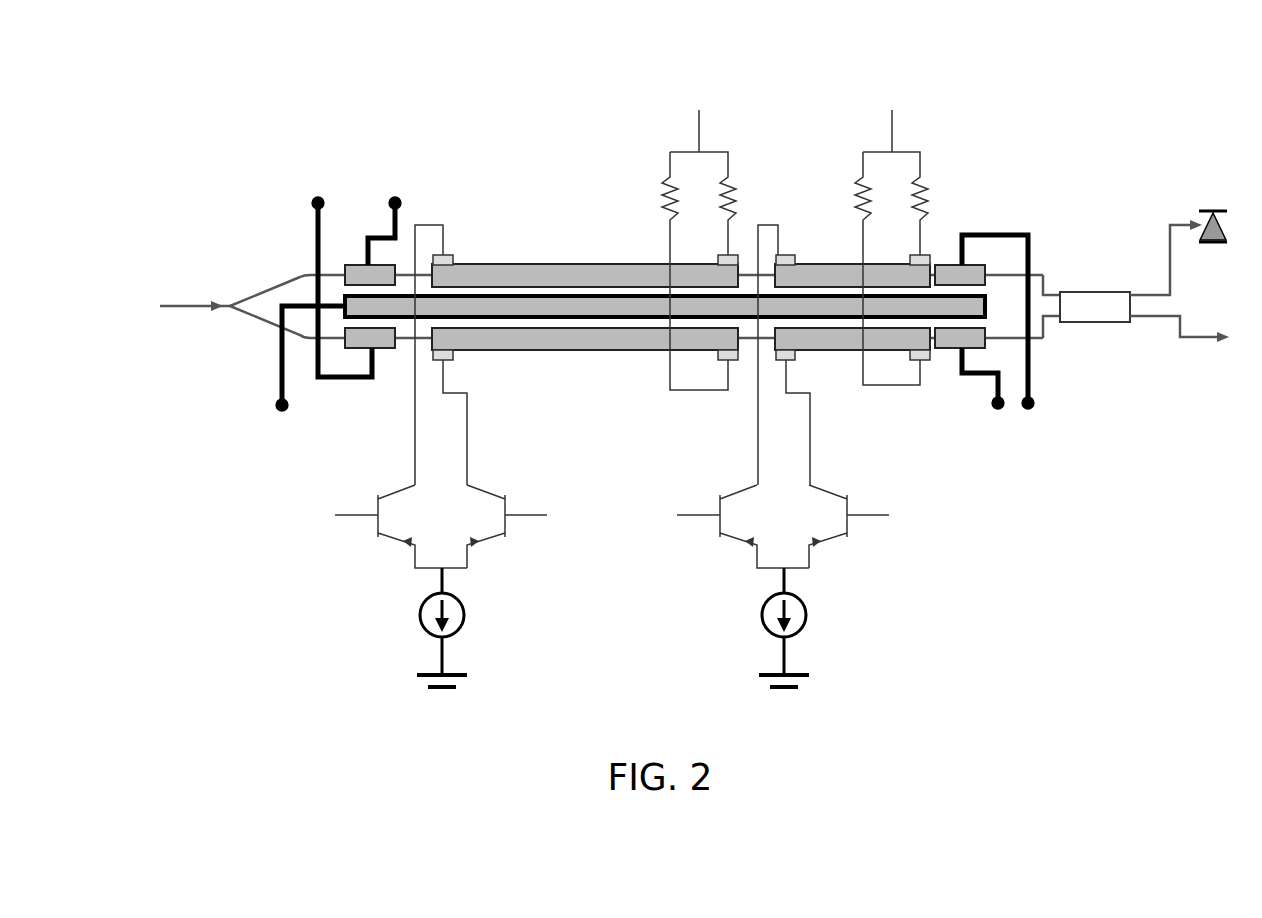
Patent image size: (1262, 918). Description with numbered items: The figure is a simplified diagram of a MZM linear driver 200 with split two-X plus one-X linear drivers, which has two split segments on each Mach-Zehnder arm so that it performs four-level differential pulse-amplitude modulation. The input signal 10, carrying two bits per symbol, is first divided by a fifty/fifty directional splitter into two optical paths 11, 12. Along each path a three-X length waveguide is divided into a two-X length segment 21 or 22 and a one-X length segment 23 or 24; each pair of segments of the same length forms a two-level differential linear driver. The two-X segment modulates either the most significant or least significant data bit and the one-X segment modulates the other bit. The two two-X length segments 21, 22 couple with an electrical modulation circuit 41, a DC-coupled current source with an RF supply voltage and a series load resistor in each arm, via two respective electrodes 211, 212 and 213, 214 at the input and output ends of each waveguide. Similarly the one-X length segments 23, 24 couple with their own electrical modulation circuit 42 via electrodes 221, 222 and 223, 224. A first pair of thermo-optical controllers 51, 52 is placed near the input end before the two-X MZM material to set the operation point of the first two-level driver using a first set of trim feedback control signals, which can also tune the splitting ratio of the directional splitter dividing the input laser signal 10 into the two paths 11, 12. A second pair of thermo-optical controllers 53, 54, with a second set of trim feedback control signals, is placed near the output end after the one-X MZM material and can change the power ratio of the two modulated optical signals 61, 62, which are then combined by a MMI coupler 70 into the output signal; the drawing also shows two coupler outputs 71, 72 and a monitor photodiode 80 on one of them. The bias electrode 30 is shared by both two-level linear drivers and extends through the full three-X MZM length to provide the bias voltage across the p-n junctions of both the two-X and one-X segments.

The MZM linear driver 200 is at (476, 78).
The input signal 10 is at (205, 300).
The first optical path 11 is at (277, 287).
The second optical path 12 is at (295, 337).
The 2X length segment 21 is at (478, 264).
The 2X length segment 22 is at (512, 350).
The 1X length segment 23 is at (810, 264).
The 1X length segment 24 is at (838, 350).
The bias electrode 30 is at (578, 296).
The electrical modulation circuit 41 is at (465, 607).
The electrical modulation circuit 42 is at (807, 607).
The thermo-optical controller 51 is at (355, 263).
The thermo-optical controller 52 is at (383, 350).
The thermo-optical controller 53 is at (950, 263).
The thermo-optical controller 54 is at (950, 348).
The modulated optical signal 61 is at (1040, 272).
The modulated optical signal 62 is at (1042, 340).
The MMI coupler 70 is at (1085, 292).
The first output waveguide 71 is at (1168, 258).
The second output waveguide 72 is at (1195, 340).
The monitor photodiode 80 is at (1212, 212).
The electrode 211 is at (450, 255).
The electrode 212 is at (722, 257).
The electrode 213 is at (452, 356).
The electrode 214 is at (722, 362).
The electrode 221 is at (781, 255).
The electrode 222 is at (915, 256).
The electrode 223 is at (800, 360).
The electrode 224 is at (915, 360).